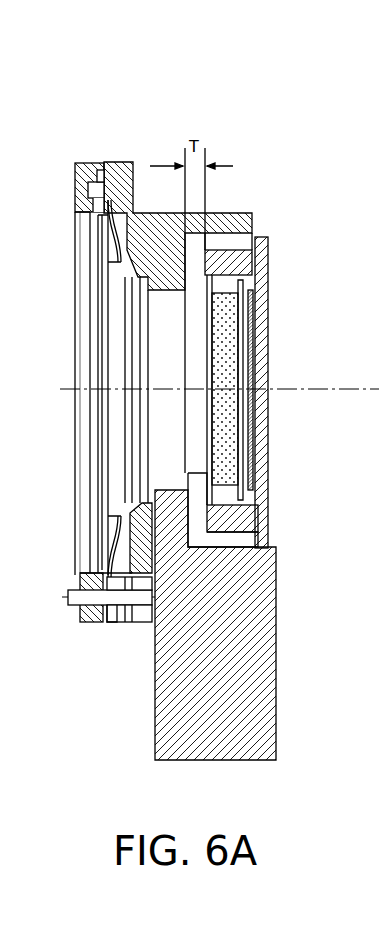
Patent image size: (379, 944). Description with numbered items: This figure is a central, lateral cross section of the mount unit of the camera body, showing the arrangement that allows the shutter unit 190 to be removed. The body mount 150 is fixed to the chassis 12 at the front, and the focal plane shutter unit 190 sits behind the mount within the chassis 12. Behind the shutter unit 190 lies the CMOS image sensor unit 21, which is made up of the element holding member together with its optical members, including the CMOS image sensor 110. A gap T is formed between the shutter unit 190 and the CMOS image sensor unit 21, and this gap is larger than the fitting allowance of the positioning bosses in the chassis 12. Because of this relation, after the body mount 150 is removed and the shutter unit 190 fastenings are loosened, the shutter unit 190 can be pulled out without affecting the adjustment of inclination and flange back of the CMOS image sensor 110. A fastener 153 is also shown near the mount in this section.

The chassis 12 is at (118, 192).
The CMOS image sensor unit 21 is at (248, 233).
The CMOS image sensor 110 is at (262, 337).
The body mount 150 is at (92, 168).
The screw 153 is at (90, 618).
The focal plane shutter unit 190 is at (232, 705).